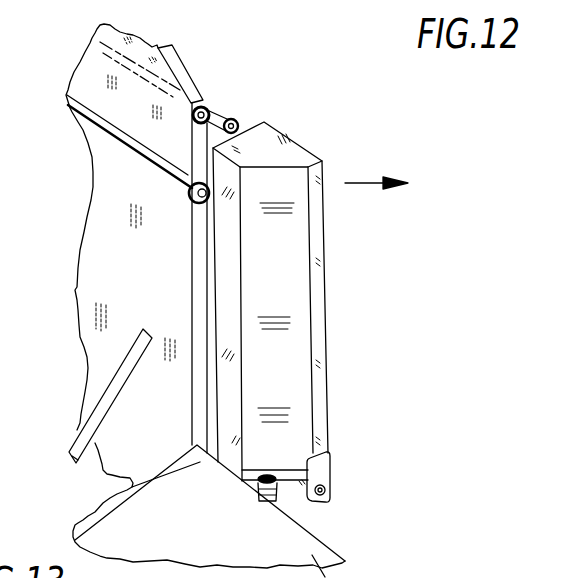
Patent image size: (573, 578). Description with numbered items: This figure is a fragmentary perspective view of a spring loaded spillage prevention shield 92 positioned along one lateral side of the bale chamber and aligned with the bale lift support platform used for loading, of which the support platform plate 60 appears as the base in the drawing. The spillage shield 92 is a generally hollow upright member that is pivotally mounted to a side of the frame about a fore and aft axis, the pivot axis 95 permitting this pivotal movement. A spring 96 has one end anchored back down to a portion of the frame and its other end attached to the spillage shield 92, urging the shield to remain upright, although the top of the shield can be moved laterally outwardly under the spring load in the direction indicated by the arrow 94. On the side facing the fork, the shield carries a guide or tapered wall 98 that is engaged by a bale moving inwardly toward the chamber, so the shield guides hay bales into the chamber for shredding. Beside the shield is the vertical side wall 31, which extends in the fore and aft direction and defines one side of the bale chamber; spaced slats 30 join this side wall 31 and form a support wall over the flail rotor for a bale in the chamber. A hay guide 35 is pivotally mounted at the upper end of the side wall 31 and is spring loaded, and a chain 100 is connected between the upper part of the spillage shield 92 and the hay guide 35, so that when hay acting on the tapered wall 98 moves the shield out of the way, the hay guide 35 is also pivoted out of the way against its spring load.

The vertical side wall 31 is at (103, 250).
The hay guide 35 is at (183, 75).
The chain 100 is at (229, 115).
The tapered wall 98 is at (283, 185).
The arrow 94 is at (360, 184).
The spring loaded spillage prevention shield 92 is at (293, 299).
The pivot axis 95 is at (330, 488).
The spring 96 is at (278, 500).
The support platform plate 60 is at (352, 577).
The slats 30 is at (88, 432).